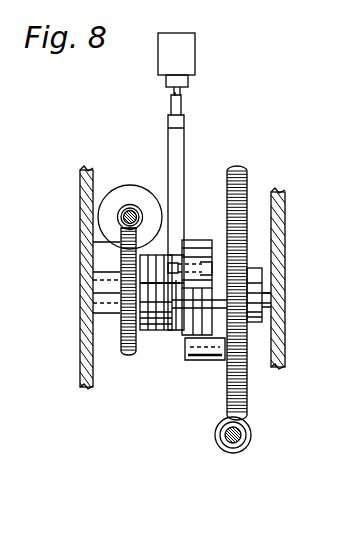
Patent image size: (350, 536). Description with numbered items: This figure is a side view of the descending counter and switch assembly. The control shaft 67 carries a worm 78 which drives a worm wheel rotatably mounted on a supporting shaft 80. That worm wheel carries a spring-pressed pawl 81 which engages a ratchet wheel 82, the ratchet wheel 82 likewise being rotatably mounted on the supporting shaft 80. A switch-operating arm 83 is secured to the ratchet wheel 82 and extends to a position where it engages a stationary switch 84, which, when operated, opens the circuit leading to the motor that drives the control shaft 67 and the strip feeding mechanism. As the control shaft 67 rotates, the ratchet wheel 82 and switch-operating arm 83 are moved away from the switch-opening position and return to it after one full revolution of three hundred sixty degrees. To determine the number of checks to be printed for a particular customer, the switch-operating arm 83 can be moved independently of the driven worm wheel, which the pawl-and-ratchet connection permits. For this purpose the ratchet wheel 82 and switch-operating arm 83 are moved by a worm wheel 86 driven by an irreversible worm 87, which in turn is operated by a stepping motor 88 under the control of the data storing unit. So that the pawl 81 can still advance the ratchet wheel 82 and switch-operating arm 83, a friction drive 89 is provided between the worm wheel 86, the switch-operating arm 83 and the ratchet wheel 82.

The stationary switch 84 is at (185, 58).
The switch-operating arm 83 is at (176, 143).
The stepping motor 88 is at (118, 194).
The irreversible worm 87 is at (135, 208).
The worm wheel 86 is at (128, 358).
The friction drive 89 is at (150, 328).
The ratchet wheel 82 is at (196, 245).
The spring-pressed pawl 81 is at (185, 343).
The control shaft 67 is at (237, 445).
The supporting shaft 80 is at (262, 290).
The worm 78 is at (218, 445).